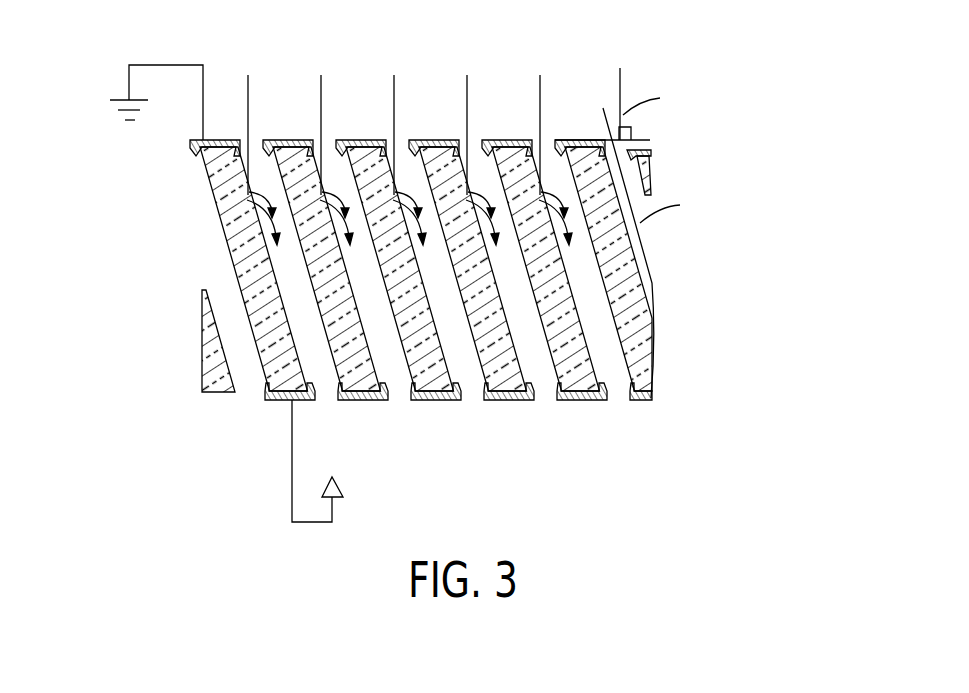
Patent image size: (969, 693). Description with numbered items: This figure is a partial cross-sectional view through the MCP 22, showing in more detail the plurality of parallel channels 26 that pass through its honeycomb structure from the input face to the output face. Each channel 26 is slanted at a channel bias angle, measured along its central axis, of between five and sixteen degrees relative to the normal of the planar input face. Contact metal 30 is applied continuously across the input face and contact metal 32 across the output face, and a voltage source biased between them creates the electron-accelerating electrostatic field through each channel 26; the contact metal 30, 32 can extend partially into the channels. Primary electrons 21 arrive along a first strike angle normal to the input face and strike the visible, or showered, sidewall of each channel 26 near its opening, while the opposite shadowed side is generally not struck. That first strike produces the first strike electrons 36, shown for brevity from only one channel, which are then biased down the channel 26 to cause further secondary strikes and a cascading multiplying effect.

The primary electrons 21 is at (250, 85).
The MCP 22 is at (735, 118).
The channels 26 is at (385, 347).
The contact metal 30 is at (208, 139).
The contact metal 32 is at (302, 400).
The first strike electrons 36 is at (273, 218).